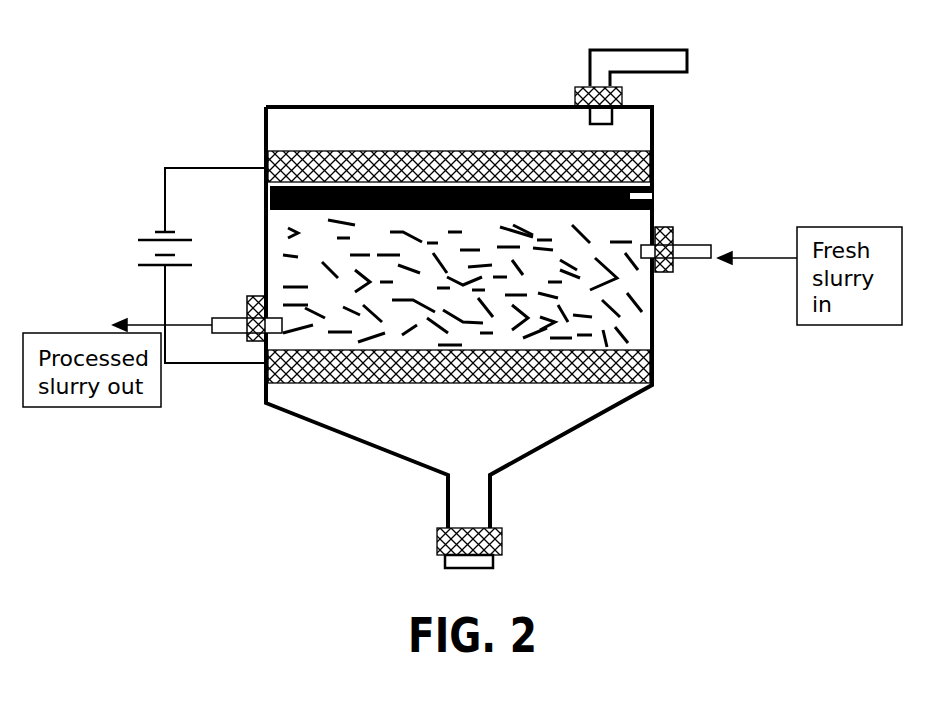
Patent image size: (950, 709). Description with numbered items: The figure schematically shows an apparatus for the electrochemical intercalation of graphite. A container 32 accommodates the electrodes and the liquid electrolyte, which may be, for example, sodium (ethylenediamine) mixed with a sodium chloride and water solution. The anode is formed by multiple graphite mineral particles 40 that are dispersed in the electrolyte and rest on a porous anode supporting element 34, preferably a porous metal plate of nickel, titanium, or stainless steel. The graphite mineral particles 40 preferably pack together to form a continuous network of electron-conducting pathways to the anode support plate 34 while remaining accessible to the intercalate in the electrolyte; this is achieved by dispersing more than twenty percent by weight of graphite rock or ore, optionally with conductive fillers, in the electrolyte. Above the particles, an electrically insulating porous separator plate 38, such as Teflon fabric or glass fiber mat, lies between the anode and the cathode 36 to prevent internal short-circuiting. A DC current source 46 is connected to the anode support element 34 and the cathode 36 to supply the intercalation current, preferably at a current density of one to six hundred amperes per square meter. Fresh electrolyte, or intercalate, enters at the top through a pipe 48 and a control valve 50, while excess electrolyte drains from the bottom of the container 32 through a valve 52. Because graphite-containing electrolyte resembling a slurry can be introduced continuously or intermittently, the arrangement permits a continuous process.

The container 32 is at (655, 305).
The porous anode supporting element 34 is at (605, 380).
The cathode 36 is at (635, 170).
The porous separator plate 38 is at (650, 197).
The graphite mineral particles 40 is at (632, 332).
The DC current source 46 is at (178, 265).
The pipe 48 is at (657, 58).
The control valve 50 is at (583, 97).
The valve 52 is at (503, 543).